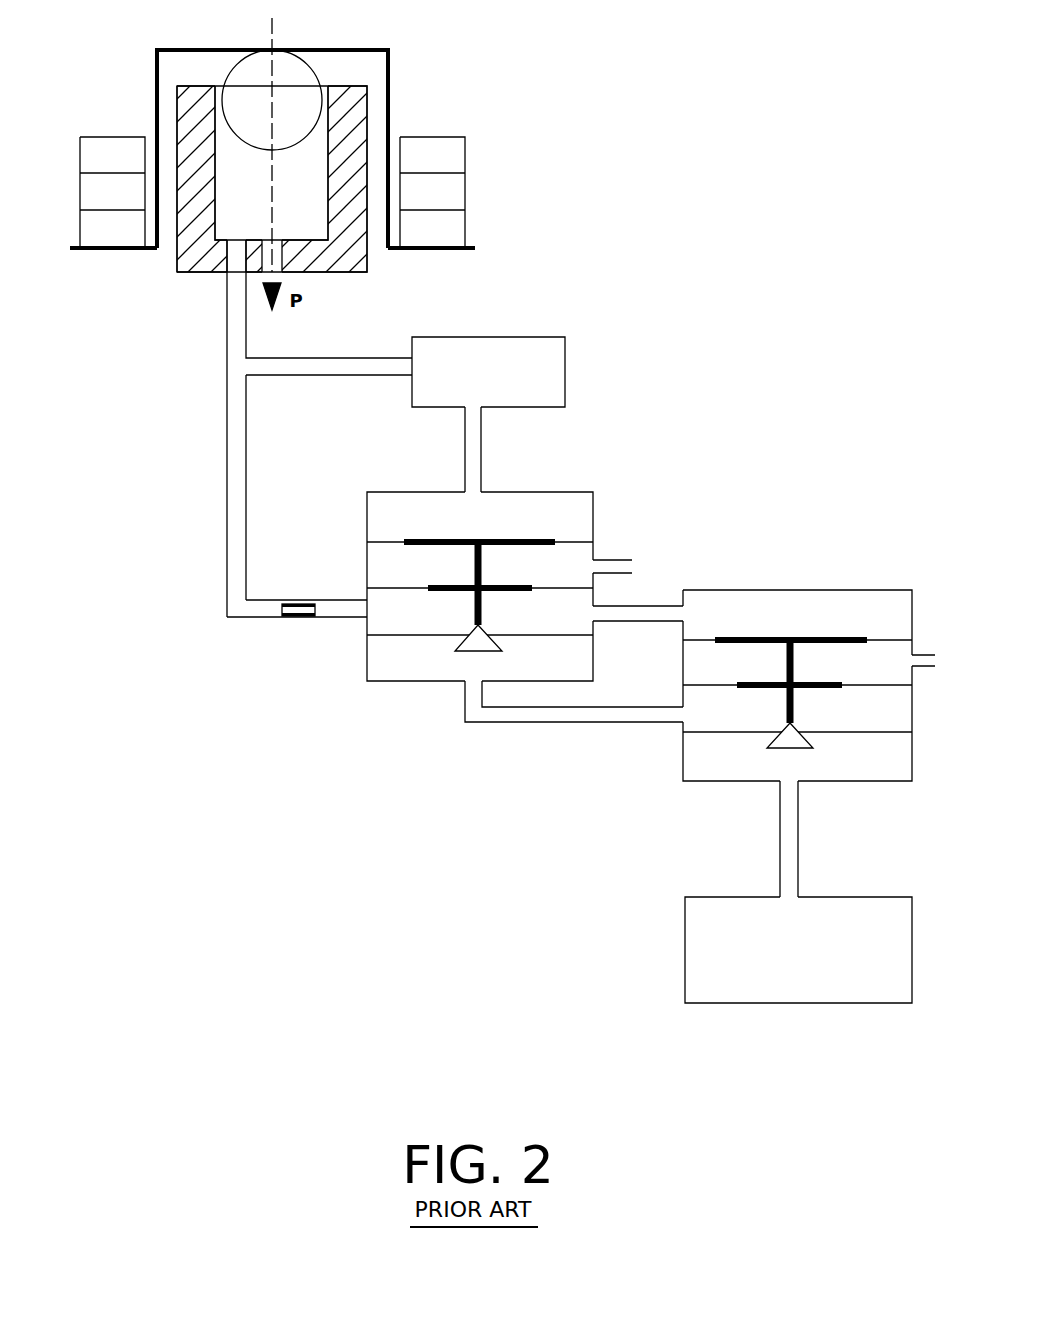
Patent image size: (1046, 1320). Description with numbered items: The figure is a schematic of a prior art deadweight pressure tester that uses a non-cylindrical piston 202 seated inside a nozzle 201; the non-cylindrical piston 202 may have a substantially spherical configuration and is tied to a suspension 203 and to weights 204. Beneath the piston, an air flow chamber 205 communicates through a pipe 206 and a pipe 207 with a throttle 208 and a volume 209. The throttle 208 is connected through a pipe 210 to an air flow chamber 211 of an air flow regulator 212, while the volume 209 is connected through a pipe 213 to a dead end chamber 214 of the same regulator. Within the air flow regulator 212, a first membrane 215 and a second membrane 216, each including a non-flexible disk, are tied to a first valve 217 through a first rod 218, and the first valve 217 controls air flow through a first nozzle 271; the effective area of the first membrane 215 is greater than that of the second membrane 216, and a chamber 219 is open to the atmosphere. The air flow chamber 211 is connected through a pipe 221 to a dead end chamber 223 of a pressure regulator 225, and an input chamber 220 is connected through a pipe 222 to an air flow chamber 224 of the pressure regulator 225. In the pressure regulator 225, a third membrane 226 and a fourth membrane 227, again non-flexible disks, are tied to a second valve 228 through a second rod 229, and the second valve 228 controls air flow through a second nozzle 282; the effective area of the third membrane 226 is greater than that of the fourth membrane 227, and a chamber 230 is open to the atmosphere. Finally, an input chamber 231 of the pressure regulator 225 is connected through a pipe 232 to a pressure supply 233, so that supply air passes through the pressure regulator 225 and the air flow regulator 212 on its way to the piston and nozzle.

The nozzle 201 is at (198, 88).
The non-cylindrical piston 202 is at (287, 62).
The suspension 203 is at (388, 93).
The weights 204 is at (455, 188).
The air flow chamber 205 is at (250, 173).
The pipe 206 is at (237, 443).
The pipe 207 is at (288, 367).
The throttle 208 is at (283, 617).
The volume 209 is at (488, 372).
The pipe 210 is at (338, 597).
The air flow chamber 211 is at (403, 608).
The air flow regulator 212 is at (553, 491).
The pipe 213 is at (473, 447).
The dead end chamber 214 is at (390, 522).
The first membrane 215 is at (545, 537).
The second membrane 216 is at (450, 585).
The first valve 217 is at (468, 608).
The first rod 218 is at (369, 671).
The chamber 219 is at (567, 563).
The input chamber 220 is at (477, 670).
The pipe 221 is at (638, 603).
The pipe 222 is at (532, 715).
The dead end chamber 223 is at (733, 612).
The air flow chamber 224 is at (700, 712).
The pressure regulator 225 is at (687, 767).
The third membrane 226 is at (807, 640).
The fourth membrane 227 is at (760, 688).
The second valve 228 is at (782, 747).
The second rod 229 is at (793, 702).
The chamber 230 is at (882, 658).
The input chamber 231 is at (807, 767).
The pipe 232 is at (790, 868).
The pressure supply 233 is at (798, 950).
The first nozzle 271 is at (563, 633).
The second nozzle 282 is at (718, 733).